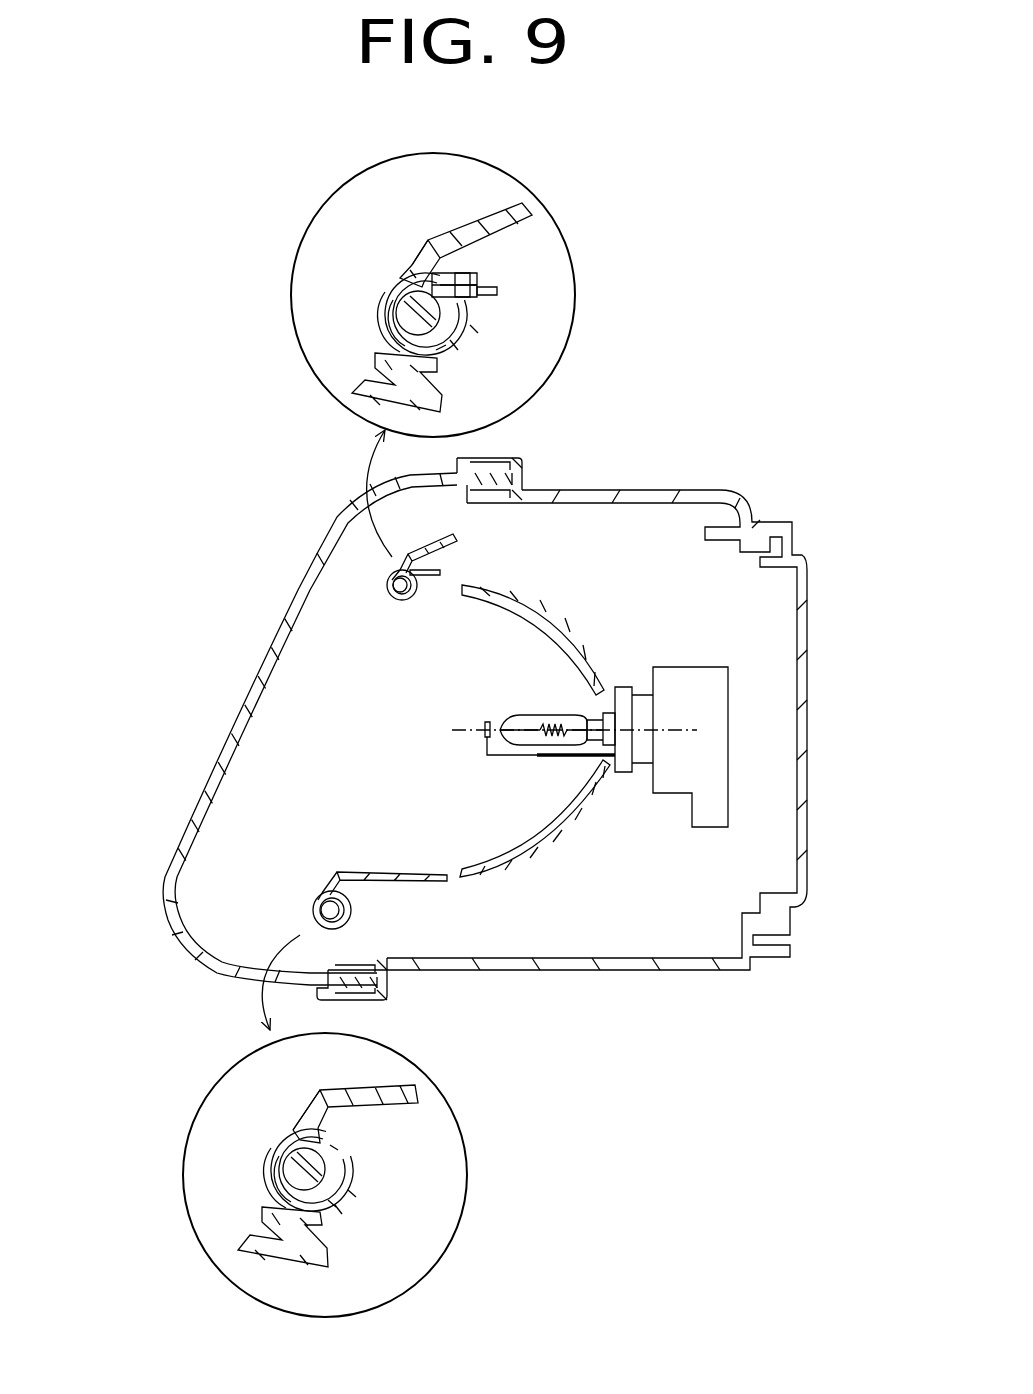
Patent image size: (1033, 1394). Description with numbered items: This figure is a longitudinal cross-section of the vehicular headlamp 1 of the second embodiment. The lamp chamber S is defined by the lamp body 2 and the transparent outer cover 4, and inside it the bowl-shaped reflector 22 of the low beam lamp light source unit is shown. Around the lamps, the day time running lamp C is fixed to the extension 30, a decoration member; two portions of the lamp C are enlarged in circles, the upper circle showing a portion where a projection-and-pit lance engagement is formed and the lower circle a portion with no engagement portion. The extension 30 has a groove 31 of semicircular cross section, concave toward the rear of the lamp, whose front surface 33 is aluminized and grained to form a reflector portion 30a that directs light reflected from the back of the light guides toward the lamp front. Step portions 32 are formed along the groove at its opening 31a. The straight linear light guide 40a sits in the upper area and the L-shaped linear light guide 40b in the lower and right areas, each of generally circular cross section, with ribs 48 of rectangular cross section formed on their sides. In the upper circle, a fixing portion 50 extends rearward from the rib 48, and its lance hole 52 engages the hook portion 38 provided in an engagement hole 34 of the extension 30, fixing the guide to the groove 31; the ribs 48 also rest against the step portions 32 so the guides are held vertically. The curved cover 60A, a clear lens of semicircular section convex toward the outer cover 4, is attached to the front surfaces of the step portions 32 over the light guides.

The vehicular headlamp 1 is at (756, 466).
The lamp body 2 is at (684, 491).
The outer cover 4 is at (258, 665).
The reflector 22 is at (560, 838).
The extension 30 is at (425, 552).
The reflector portion 30a is at (420, 597).
The groove 31 is at (450, 347).
The opening 31a is at (392, 279).
The step portions 32 is at (392, 347).
The front surface 33 is at (477, 340).
The engagement holes 34 is at (481, 303).
The hook portion 38 is at (473, 287).
The straight linear light guide 40a is at (388, 598).
The L-shaped linear light guide 40b is at (315, 915).
The ribs 48 is at (413, 273).
The fixing portion 50 is at (440, 573).
The lance holes 52 is at (463, 280).
The curved cover 60A is at (385, 585).
The day time running lamp C is at (383, 567).
The lamp chamber S is at (672, 617).